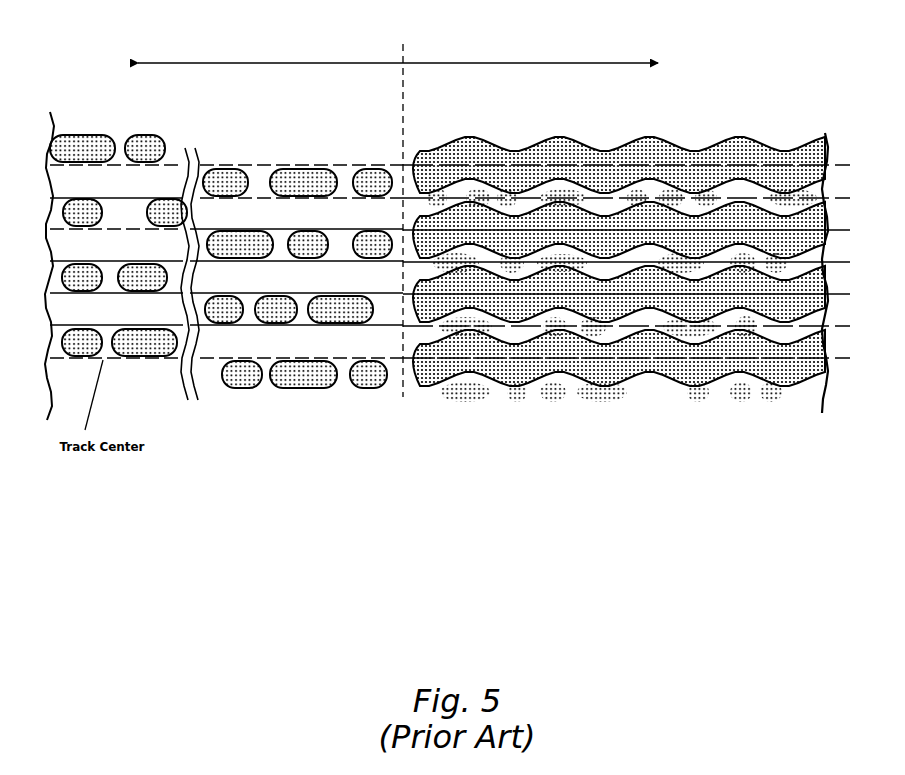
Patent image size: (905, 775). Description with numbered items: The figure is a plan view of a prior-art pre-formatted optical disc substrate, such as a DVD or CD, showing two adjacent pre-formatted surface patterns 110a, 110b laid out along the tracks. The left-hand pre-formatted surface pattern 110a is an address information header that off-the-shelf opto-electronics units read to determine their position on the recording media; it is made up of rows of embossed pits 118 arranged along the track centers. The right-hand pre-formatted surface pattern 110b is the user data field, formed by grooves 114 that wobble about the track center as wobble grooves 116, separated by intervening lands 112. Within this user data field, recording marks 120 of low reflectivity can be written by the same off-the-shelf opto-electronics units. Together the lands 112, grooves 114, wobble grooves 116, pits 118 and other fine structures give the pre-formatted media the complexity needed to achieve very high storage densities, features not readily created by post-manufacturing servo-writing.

The pre-formatted surface pattern 110a is at (270, 35).
The pre-formatted surface pattern 110b is at (530, 38).
The lands 112 is at (763, 333).
The grooves 114 is at (653, 382).
The wobble grooves 116 is at (500, 382).
The pits 118 is at (249, 392).
The recording marks 120 is at (450, 403).